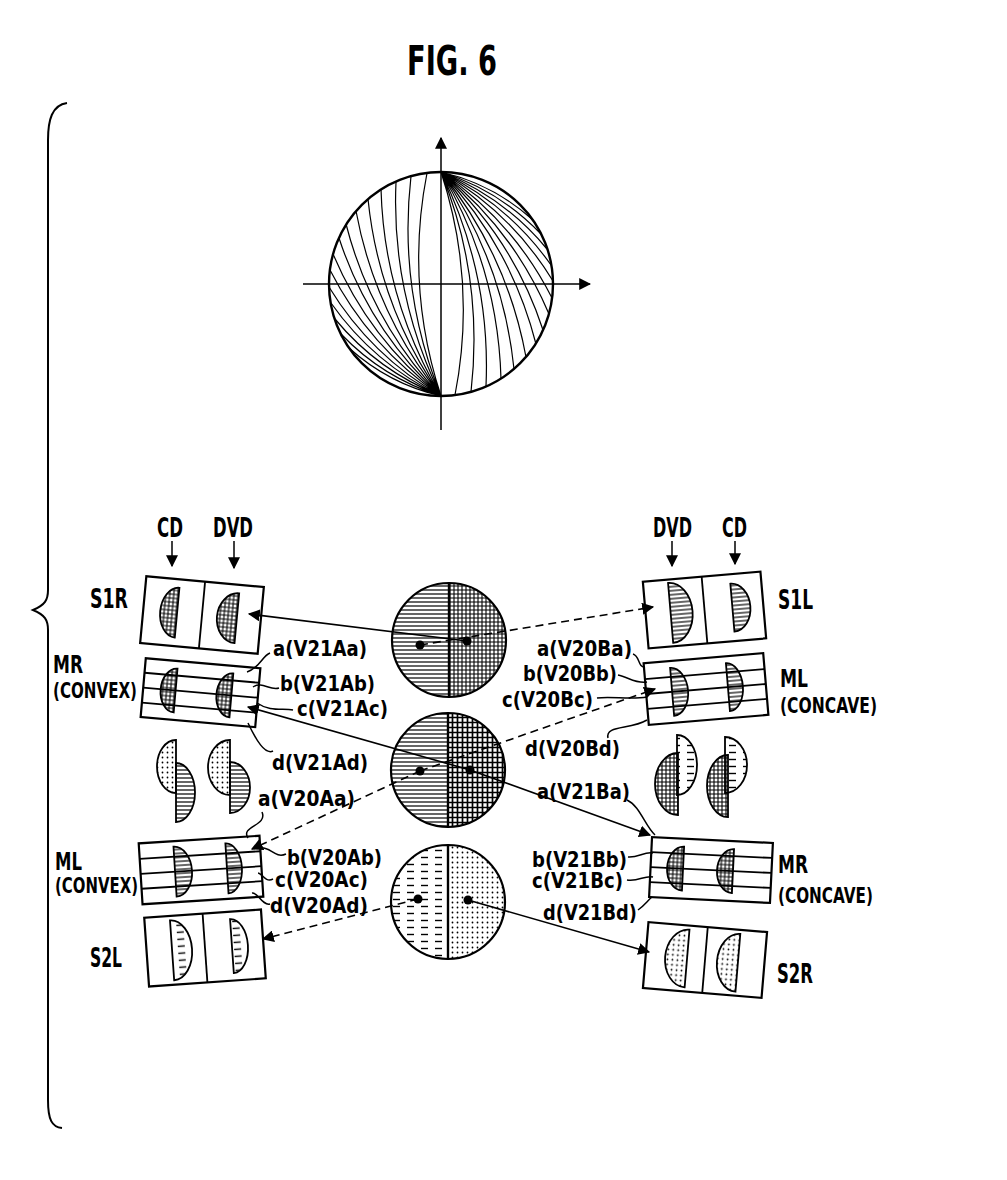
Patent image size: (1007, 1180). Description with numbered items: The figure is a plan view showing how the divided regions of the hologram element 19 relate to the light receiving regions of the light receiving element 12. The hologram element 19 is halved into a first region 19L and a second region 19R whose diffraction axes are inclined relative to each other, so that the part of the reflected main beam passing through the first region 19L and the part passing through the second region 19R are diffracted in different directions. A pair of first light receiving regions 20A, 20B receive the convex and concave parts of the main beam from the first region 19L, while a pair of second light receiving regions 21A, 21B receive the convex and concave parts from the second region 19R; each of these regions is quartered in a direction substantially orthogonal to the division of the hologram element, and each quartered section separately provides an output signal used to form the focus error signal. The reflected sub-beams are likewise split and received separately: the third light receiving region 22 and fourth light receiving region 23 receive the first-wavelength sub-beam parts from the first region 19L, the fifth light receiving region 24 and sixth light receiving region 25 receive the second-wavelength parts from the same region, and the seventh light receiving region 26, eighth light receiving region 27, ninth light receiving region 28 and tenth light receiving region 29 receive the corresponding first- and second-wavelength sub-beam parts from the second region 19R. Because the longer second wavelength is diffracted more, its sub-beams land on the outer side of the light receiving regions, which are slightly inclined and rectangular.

The hologram element 19 is at (449, 284).
The first region 19L is at (370, 344).
The second region 19R is at (520, 344).
The light receiving element 12 is at (596, 505).
The ninth light receiving region 28 is at (160, 580).
The seventh light receiving region 26 is at (222, 580).
The third light receiving region 22 is at (687, 580).
The fifth light receiving region 24 is at (750, 572).
The second light receiving region 21A is at (140, 710).
The first light receiving region 20A is at (160, 840).
The first light receiving region 20B is at (765, 655).
The second light receiving region 21B is at (767, 840).
The sixth light receiving region 25 is at (187, 987).
The fourth light receiving region 23 is at (235, 982).
The eighth light receiving region 27 is at (653, 982).
The tenth light receiving region 29 is at (750, 987).